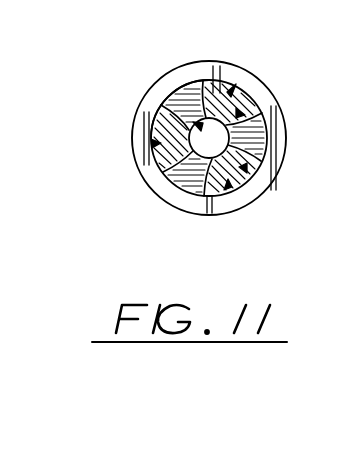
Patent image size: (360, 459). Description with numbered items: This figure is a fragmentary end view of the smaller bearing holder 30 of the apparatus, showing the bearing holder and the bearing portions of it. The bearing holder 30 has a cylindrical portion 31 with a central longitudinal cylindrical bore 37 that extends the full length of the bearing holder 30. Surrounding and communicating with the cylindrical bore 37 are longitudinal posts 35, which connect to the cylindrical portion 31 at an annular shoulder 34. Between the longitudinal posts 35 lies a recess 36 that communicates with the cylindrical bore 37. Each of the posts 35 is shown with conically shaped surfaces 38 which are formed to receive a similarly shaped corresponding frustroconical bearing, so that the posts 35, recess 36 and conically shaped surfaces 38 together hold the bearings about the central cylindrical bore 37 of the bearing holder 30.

The bearing holder 30 is at (147, 182).
The cylindrical portion 31 is at (263, 82).
The annular shoulder 34 is at (240, 198).
The longitudinal posts 35 is at (197, 86).
The recess 36 is at (229, 89).
The cylindrical bore 37 is at (172, 104).
The conically shaped surfaces 38 is at (272, 99).